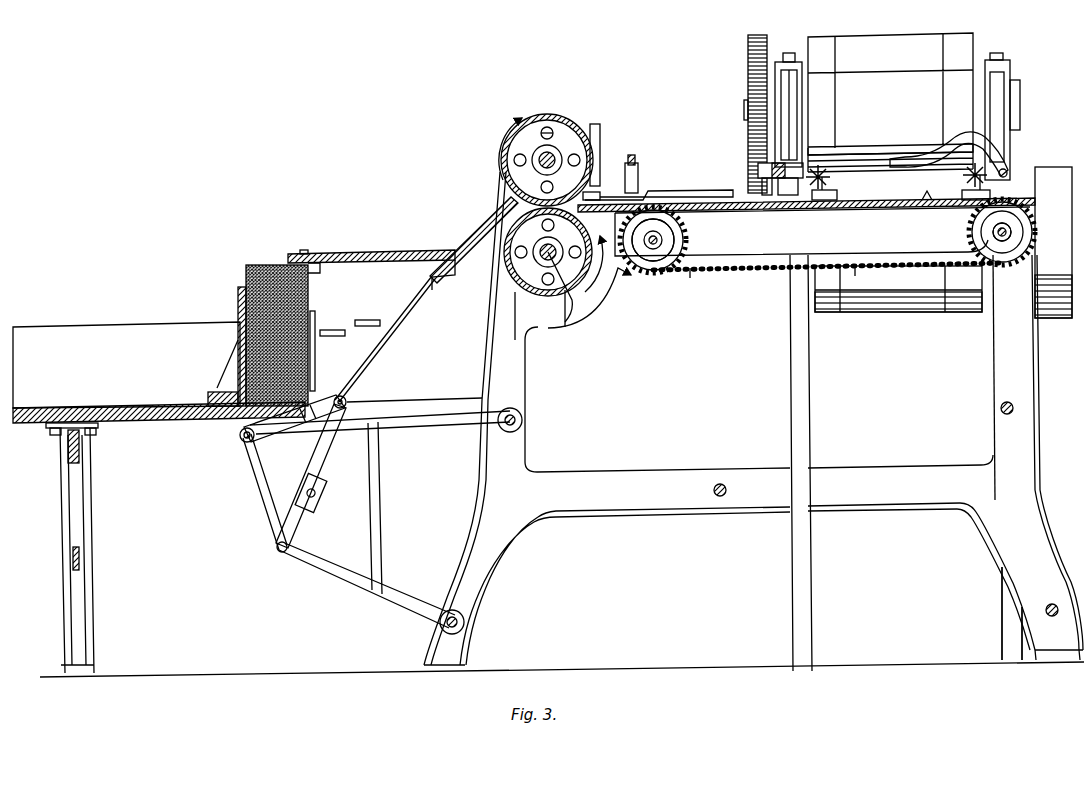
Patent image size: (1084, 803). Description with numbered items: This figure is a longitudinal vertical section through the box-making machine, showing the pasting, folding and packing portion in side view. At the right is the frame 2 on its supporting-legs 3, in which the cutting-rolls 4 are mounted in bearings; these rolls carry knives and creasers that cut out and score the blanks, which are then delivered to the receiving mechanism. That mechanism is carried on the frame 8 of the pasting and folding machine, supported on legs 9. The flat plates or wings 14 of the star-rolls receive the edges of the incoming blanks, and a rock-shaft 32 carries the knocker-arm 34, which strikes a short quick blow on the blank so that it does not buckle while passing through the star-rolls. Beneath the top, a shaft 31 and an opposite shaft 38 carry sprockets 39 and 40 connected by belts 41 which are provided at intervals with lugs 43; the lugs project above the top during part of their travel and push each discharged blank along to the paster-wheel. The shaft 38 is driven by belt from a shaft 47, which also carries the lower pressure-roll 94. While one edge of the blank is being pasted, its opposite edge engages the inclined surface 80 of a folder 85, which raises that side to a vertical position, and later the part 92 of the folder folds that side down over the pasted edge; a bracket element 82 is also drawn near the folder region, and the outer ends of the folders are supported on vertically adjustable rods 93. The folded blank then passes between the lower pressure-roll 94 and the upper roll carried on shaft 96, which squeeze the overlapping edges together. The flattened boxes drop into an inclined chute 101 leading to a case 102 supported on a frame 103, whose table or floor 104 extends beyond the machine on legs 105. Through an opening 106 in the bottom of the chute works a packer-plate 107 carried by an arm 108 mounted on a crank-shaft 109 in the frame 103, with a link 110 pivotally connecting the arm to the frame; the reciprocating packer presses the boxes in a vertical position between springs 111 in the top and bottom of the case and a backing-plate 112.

The frame 2 is at (787, 83).
The supporting-legs 3 is at (797, 417).
The cutting-rolls 4 is at (903, 50).
The frame of the pasting and folding machine 8 is at (822, 231).
The legs 9 is at (496, 548).
The flat plates or wings 14 is at (831, 182).
The shaft 31 is at (1008, 232).
The rock-shaft 32 is at (1008, 174).
The knocker-arm 34 is at (918, 158).
The shaft 38 is at (655, 245).
The sprocket 39 is at (675, 240).
The sprocket 40 is at (987, 232).
The belts 41 is at (775, 272).
The lugs 43 is at (928, 203).
The shaft 47 is at (565, 322).
The inclined surface of the folder 80 is at (750, 202).
The rack bracket 82 is at (754, 170).
The folder 85 is at (690, 192).
The part of the folder 92 is at (640, 180).
The rods 93 is at (570, 118).
The pressure-roll 94 is at (520, 294).
The shaft 96 is at (562, 158).
The inclined chute 101 is at (478, 238).
The case 102 is at (401, 331).
The frame 103 is at (424, 421).
The table or floor 104 is at (168, 422).
The legs 105 is at (80, 528).
The opening 106 is at (402, 328).
The packer-plate 107 is at (314, 322).
The arm 108 is at (326, 450).
The crank-shaft 109 is at (305, 508).
The link 110 is at (302, 420).
The springs 111 is at (318, 262).
The backing-plate 112 is at (238, 305).